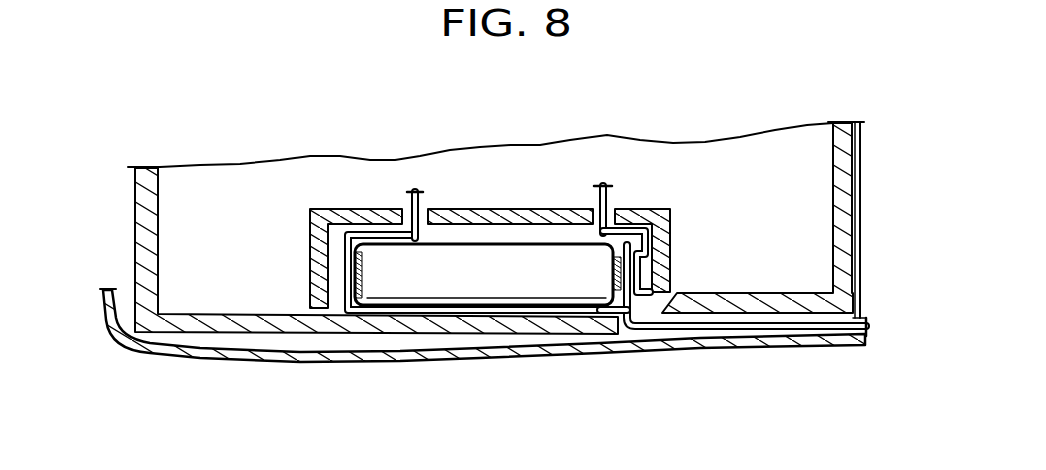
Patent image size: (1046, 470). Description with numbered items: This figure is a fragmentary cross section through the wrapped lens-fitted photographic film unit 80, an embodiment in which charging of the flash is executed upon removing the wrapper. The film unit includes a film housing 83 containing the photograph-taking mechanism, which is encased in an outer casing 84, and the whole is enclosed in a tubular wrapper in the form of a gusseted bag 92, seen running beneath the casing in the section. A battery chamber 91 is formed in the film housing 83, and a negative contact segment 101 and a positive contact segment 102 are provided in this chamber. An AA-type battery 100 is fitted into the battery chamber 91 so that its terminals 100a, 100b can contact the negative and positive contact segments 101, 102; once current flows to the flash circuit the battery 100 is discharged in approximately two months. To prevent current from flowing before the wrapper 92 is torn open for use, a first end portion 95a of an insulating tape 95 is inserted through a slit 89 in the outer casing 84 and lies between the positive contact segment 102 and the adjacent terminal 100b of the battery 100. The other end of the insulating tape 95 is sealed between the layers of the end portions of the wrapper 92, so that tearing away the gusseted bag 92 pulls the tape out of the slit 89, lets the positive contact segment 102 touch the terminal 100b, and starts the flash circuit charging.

The lens-fitted photographic film unit 80 is at (186, 366).
The film housing 83 is at (838, 212).
The outer casing 84 is at (857, 212).
The slit 89 is at (623, 336).
The battery chamber 91 is at (493, 240).
The gusseted bag 92 is at (397, 358).
The insulating tape 95 is at (670, 333).
The first end portion of insulating tape 95a is at (615, 307).
The battery 100 is at (485, 299).
The terminal of battery 100a is at (372, 277).
The terminal of battery 100b is at (612, 277).
The negative contact segment 101 is at (415, 192).
The positive contact segment 102 is at (603, 186).